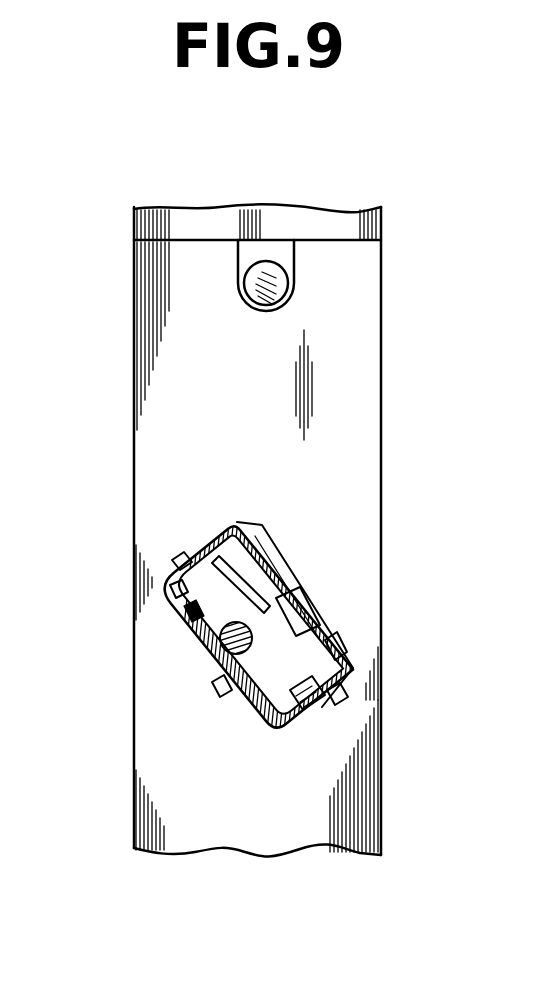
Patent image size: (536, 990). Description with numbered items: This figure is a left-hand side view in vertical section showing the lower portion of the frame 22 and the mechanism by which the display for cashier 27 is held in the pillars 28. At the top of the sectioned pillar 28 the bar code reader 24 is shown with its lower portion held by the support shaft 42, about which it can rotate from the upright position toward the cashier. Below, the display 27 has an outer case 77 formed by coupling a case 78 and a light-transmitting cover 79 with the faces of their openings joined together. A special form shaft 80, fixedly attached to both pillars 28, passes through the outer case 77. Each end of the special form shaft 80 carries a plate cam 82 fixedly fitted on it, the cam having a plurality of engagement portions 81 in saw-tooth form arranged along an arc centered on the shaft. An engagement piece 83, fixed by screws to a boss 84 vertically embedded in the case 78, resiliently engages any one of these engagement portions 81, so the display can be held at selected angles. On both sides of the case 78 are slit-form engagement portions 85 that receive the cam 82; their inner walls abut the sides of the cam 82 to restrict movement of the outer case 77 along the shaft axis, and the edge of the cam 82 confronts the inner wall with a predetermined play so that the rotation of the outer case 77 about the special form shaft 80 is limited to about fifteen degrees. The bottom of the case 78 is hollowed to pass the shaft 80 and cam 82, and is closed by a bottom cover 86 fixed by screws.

The frame 22 is at (360, 333).
The bar code reader 24 is at (148, 223).
The display for cashier 27 is at (197, 545).
The pillar 28 is at (357, 427).
The support shaft 42 is at (243, 280).
The outer case 77 is at (178, 567).
The case 78 is at (177, 590).
The light-transmitting cover 79 is at (247, 523).
The special form shaft 80 is at (217, 663).
The engagement portions 81 is at (320, 612).
The plate cam 82 is at (262, 605).
The engagement piece 83 is at (335, 633).
The boss 84 is at (335, 697).
The engagement portion 85 is at (307, 707).
The bottom cover 86 is at (220, 687).